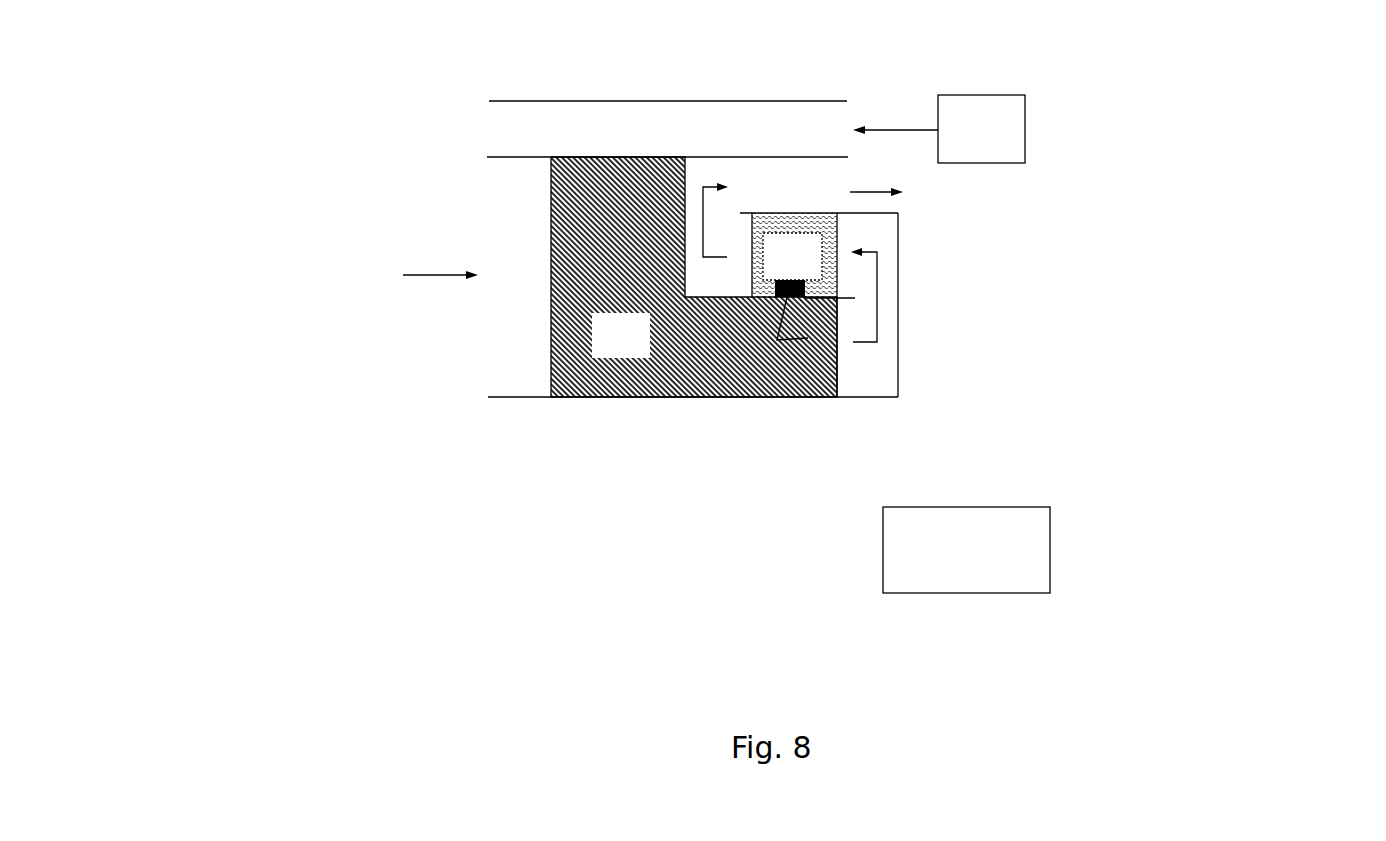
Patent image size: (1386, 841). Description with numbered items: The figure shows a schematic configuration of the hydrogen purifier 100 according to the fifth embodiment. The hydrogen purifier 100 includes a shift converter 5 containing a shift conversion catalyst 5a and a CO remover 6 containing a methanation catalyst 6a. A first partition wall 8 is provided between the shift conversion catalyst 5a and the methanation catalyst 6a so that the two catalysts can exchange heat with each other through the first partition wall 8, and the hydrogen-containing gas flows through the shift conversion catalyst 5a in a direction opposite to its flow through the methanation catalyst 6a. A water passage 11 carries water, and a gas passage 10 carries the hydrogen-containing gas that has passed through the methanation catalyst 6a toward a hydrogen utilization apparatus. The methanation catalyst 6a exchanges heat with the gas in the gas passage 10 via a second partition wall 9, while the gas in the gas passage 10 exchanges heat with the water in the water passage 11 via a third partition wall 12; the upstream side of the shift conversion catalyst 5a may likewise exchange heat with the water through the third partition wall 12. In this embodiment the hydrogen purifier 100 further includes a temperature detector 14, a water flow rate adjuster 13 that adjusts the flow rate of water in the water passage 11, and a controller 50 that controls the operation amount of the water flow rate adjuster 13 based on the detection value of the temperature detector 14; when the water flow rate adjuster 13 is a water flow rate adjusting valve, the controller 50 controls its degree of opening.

The hydrogen purifier 100 is at (432, 62).
The shift converter 5 is at (694, 305).
The shift conversion catalyst 5a is at (621, 335).
The CO remover 6 is at (837, 303).
The methanation catalyst 6a is at (794, 255).
The first partition wall 8 is at (806, 294).
The second partition wall 9 is at (792, 213).
The gas passage 10 is at (773, 168).
The water passage 11 is at (577, 115).
The third partition wall 12 is at (717, 157).
The water flow rate adjuster 13 is at (963, 507).
The temperature detector 14 is at (963, 647).
The controller 50 is at (966, 550).